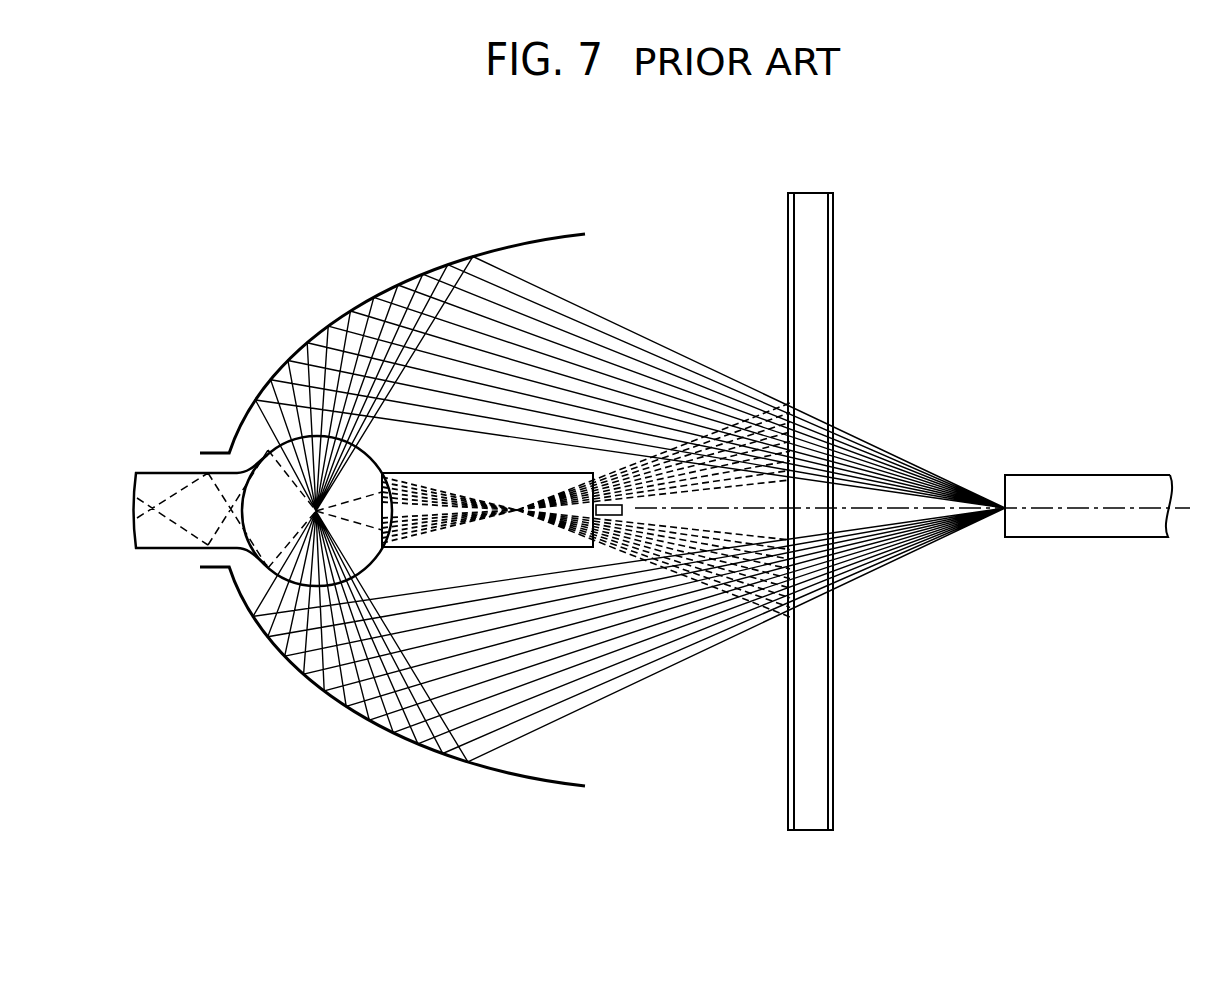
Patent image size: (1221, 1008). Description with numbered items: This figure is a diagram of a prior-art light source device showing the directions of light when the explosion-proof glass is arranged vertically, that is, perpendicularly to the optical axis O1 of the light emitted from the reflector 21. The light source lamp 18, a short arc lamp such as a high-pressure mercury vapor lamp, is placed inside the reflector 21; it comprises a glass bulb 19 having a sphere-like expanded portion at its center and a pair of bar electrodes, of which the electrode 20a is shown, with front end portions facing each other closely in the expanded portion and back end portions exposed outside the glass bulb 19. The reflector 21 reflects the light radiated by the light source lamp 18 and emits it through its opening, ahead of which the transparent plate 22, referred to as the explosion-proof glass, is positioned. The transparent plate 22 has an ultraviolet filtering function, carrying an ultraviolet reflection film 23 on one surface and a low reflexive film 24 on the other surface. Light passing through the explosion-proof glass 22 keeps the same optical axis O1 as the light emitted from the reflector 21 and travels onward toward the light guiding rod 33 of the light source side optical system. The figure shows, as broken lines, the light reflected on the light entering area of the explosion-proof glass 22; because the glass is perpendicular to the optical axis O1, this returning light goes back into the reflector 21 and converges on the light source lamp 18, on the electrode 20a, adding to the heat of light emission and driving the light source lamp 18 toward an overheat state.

The light source lamp 18 is at (166, 549).
The glass bulb 19 is at (461, 538).
The bar electrode 20a is at (604, 504).
The reflector 21 is at (540, 780).
The transparent plate 22 is at (808, 817).
The ultraviolet reflection film 23 is at (790, 731).
The low reflexive film 24 is at (833, 728).
The light guiding rod 33 is at (1053, 540).
The optical axis O1 is at (873, 506).